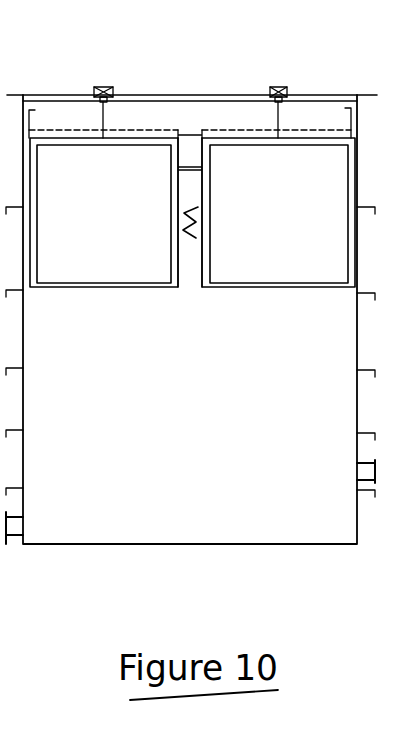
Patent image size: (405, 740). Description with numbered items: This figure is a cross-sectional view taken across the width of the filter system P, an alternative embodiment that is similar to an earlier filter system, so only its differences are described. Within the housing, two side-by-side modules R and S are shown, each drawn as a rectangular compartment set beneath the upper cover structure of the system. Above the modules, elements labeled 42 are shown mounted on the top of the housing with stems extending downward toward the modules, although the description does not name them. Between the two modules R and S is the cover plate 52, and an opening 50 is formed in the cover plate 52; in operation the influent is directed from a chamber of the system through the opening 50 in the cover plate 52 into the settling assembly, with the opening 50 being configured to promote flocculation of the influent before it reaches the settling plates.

The filter system P is at (185, 80).
The valve 42 is at (103, 86).
The opening 50 is at (204, 219).
The cover plate 52 is at (192, 273).
The module S is at (97, 247).
The module R is at (297, 265).